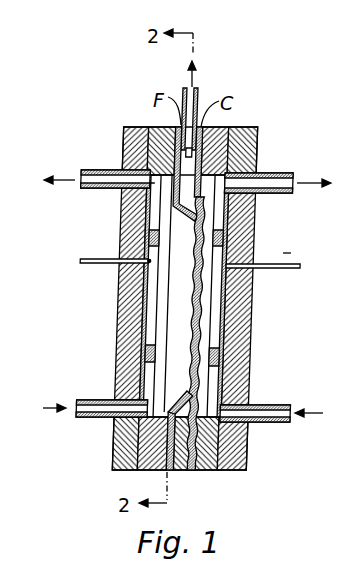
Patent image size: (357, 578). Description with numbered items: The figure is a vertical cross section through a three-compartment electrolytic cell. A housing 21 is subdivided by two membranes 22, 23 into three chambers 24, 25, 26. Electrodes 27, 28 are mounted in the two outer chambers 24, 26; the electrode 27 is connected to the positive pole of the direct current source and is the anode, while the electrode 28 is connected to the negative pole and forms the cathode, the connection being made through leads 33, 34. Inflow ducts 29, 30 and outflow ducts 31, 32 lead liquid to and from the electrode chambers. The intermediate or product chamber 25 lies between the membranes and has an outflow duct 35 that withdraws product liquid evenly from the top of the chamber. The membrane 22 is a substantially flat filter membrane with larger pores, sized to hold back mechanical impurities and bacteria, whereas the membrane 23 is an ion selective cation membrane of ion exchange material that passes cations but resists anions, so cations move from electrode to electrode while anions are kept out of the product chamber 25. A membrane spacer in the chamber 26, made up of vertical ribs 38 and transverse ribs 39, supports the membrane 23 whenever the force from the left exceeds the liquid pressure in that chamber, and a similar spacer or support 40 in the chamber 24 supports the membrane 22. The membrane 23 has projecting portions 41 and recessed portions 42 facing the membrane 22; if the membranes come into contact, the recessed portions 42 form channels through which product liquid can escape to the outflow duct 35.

The housing 21 is at (246, 143).
The membrane 22 is at (192, 313).
The membrane 23 is at (201, 313).
The chamber 24 is at (163, 391).
The intermediate or product chamber 25 is at (181, 472).
The chamber 26 is at (200, 397).
The electrode 27 is at (122, 214).
The electrode 28 is at (234, 211).
The inflow duct 29 is at (110, 417).
The inflow duct 30 is at (105, 170).
The outflow duct 31 is at (268, 415).
The outflow duct 32 is at (281, 181).
The lead 33 is at (82, 261).
The lead 34 is at (306, 268).
The outflow duct 35 is at (198, 103).
The vertical ribs 38 is at (160, 280).
The transverse ribs 39 is at (152, 348).
The spacer or support 40 is at (162, 304).
The projecting portions 41 is at (203, 371).
The recessed portions 42 is at (198, 258).